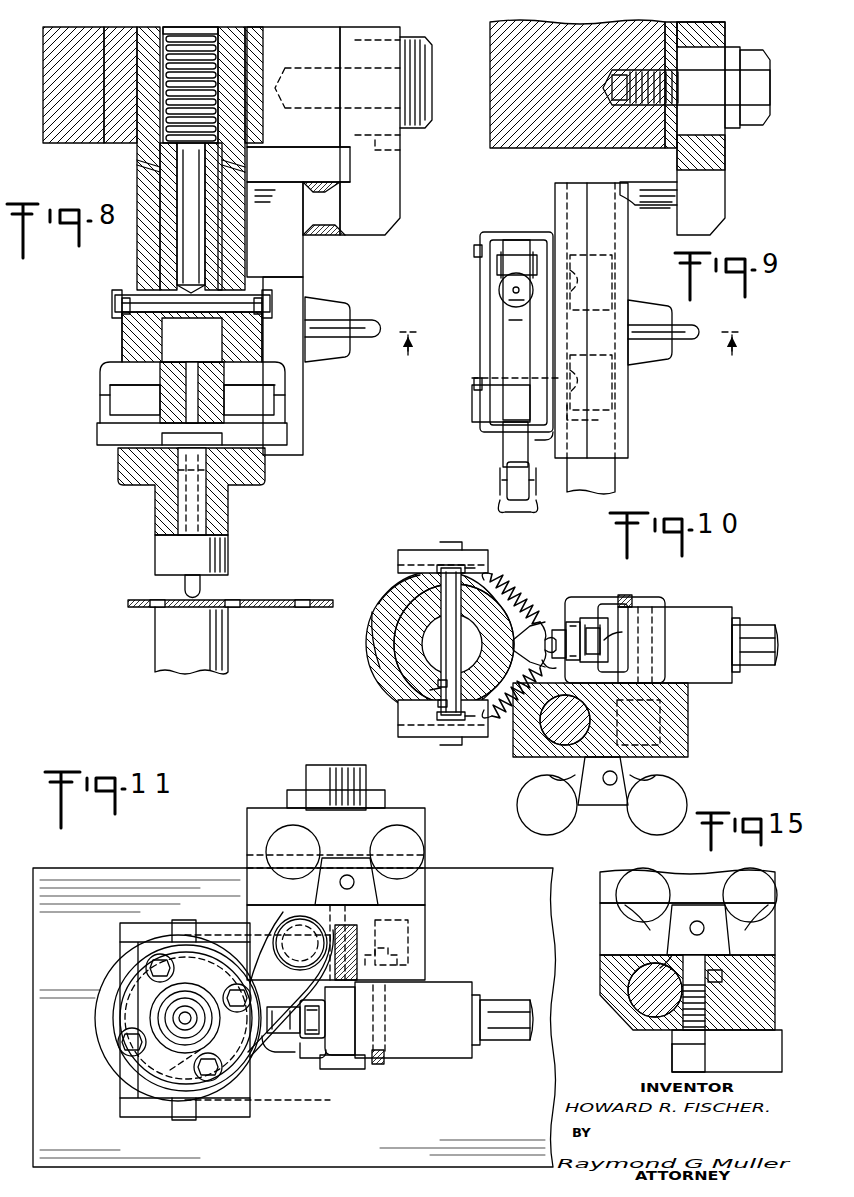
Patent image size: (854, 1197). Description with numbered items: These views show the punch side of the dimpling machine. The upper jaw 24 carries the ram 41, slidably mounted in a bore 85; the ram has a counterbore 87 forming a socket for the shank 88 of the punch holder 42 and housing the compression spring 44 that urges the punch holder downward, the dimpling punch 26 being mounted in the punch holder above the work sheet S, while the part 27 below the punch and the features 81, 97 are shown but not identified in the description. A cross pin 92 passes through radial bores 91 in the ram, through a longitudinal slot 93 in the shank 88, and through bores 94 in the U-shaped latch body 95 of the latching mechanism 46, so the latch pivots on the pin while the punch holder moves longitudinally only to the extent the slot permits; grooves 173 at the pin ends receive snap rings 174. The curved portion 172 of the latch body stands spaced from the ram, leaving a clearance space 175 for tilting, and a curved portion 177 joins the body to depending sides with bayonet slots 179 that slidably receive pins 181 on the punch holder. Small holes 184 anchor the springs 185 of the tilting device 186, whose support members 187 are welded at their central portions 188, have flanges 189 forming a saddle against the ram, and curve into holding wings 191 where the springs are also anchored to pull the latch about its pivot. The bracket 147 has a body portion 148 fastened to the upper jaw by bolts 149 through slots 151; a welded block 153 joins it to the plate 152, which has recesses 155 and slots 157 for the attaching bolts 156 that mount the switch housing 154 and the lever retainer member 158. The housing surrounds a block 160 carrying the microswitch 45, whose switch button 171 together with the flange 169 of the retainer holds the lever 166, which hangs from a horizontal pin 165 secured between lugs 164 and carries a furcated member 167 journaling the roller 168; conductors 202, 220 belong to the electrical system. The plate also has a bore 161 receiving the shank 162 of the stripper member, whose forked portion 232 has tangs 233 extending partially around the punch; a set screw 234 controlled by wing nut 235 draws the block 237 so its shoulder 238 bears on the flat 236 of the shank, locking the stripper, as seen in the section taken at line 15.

In FIG. 8, the upper jaw 24 is at (57, 68).
In FIG. 9, the upper jaw 24 is at (572, 40).
In FIG. 8, the dimpling punch 26 is at (157, 550).
In FIG. 11, the dimpling punch 26 is at (150, 1017).
In FIG. 8, the stylus shank 27 is at (160, 622).
In FIG. 8, the ram 41 is at (137, 200).
In FIG. 10, the ram 41 is at (410, 615).
In FIG. 8, the punch holder 42 is at (125, 468).
In FIG. 11, the punch holder 42 is at (118, 990).
In FIG. 8, the spring 44 is at (208, 34).
In FIG. 9, the microswitch 45 is at (478, 345).
In FIG. 10, the microswitch 45 is at (722, 690).
In FIG. 11, the microswitch 45 is at (430, 945).
In FIG. 8, the latching mechanism 46 is at (70, 305).
In FIG. 8, the stylus tip 81 is at (182, 590).
In FIG. 11, the stylus tip 81 is at (195, 1022).
In FIG. 8, the bore 85 is at (145, 122).
In FIG. 8, the counterbore 87 is at (174, 28).
In FIG. 8, the shank 88 is at (170, 227).
In FIG. 8, the radial bores 91 is at (118, 293).
In FIG. 10, the radial bores 91 is at (437, 683).
In FIG. 11, the radial bores 91 is at (160, 1070).
In FIG. 8, the cross pin 92 is at (192, 303).
In FIG. 10, the cross pin 92 is at (445, 660).
In FIG. 8, the longitudinal slot 93 is at (192, 340).
In FIG. 8, the radial bores 94 is at (128, 312).
In FIG. 10, the radial bores 94 is at (437, 703).
In FIG. 8, the latch body 95 is at (125, 330).
In FIG. 10, the latch body 95 is at (388, 590).
In FIG. 8, the bushing 97 is at (120, 32).
In FIG. 8, the bracket 147 is at (390, 186).
In FIG. 9, the bracket 147 is at (732, 148).
In FIG. 8, the body portion 148 is at (372, 35).
In FIG. 9, the body portion 148 is at (701, 128).
In FIG. 11, the body portion 148 is at (336, 856).
In FIG. 15, the body portion 148 is at (630, 878).
In FIG. 8, the bolts 149 is at (420, 37).
In FIG. 11, the bolts 149 is at (333, 768).
In FIG. 8, the slots 151 is at (402, 150).
In FIG. 9, the slots 151 is at (718, 52).
In FIG. 8, the plate 152 is at (275, 318).
In FIG. 9, the plate 152 is at (572, 193).
In FIG. 10, the plate 152 is at (535, 757).
In FIG. 11, the plate 152 is at (420, 975).
In FIG. 15, the plate 152 is at (622, 1012).
In FIG. 8, the block 153 is at (332, 222).
In FIG. 9, the block 153 is at (646, 195).
In FIG. 11, the block 153 is at (422, 896).
In FIG. 15, the block 153 is at (600, 930).
In FIG. 9, the switch housing 154 is at (484, 240).
In FIG. 10, the switch housing 154 is at (670, 607).
In FIG. 11, the switch housing 154 is at (417, 1020).
In FIG. 15, the switch housing 154 is at (762, 1072).
In FIG. 9, the recesses 155 is at (612, 265).
In FIG. 10, the recesses 155 is at (688, 738).
In FIG. 11, the recesses 155 is at (408, 925).
In FIG. 9, the attaching bolts 156 is at (600, 285).
In FIG. 10, the attaching bolts 156 is at (648, 648).
In FIG. 11, the attaching bolts 156 is at (383, 1003).
In FIG. 9, the slots 157 is at (612, 420).
In FIG. 9, the lever retainer member 158 is at (482, 326).
In FIG. 10, the lever retainer member 158 is at (660, 598).
In FIG. 11, the lever retainer member 158 is at (355, 1069).
In FIG. 9, the block 160 is at (545, 436).
In FIG. 10, the block 160 is at (630, 596).
In FIG. 11, the block 160 is at (345, 1045).
In FIG. 15, the block 160 is at (670, 1062).
In FIG. 10, the bore 161 is at (570, 745).
In FIG. 11, the bore 161 is at (298, 916).
In FIG. 9, the shank 162 is at (610, 480).
In FIG. 10, the shank 162 is at (590, 700).
In FIG. 11, the shank 162 is at (268, 900).
In FIG. 15, the shank 162 is at (638, 982).
In FIG. 9, the lugs 164 is at (520, 240).
In FIG. 10, the lugs 164 is at (580, 672).
In FIG. 11, the lugs 164 is at (312, 1008).
In FIG. 9, the horizontal pin 165 is at (498, 265).
In FIG. 10, the horizontal pin 165 is at (598, 618).
In FIG. 9, the lever 166 is at (503, 445).
In FIG. 9, the furcated member 167 is at (517, 513).
In FIG. 11, the furcated member 167 is at (298, 1055).
In FIG. 9, the roller 168 is at (508, 480).
In FIG. 10, the roller 168 is at (573, 622).
In FIG. 11, the roller 168 is at (276, 1036).
In FIG. 9, the flange 169 is at (474, 400).
In FIG. 10, the flange 169 is at (623, 637).
In FIG. 11, the flange 169 is at (315, 1060).
In FIG. 9, the switch button 171 is at (514, 291).
In FIG. 10, the switch button 171 is at (612, 638).
In FIG. 11, the switch button 171 is at (318, 1020).
In FIG. 10, the curved portion 172 is at (385, 645).
In FIG. 11, the curved portion 172 is at (96, 1030).
In FIG. 10, the grooves 173 is at (438, 568).
In FIG. 10, the retaining snap rings 174 is at (468, 566).
In FIG. 10, the clearance space 175 is at (380, 630).
In FIG. 8, the curved portion 177 is at (105, 365).
In FIG. 8, the bayonet slot 179 is at (110, 400).
In FIG. 11, the bayonet slot 179 is at (162, 921).
In FIG. 8, the pins 181 is at (105, 434).
In FIG. 10, the pins 181 is at (430, 550).
In FIG. 11, the pins 181 is at (184, 918).
In FIG. 10, the drilled holes 184 is at (494, 570).
In FIG. 10, the springs 185 is at (510, 580).
In FIG. 10, the tilting device 186 is at (500, 643).
In FIG. 10, the support members 187 is at (548, 628).
In FIG. 10, the central portions 188 is at (560, 628).
In FIG. 10, the flanges 189 is at (540, 624).
In FIG. 10, the holding wings 191 is at (560, 672).
In FIG. 10, the conductor 202 is at (762, 626).
In FIG. 11, the conductor 202 is at (508, 1002).
In FIG. 10, the conductor 220 is at (767, 630).
In FIG. 11, the conductor 220 is at (515, 1007).
In FIG. 11, the forked portion 232 is at (200, 950).
In FIG. 11, the tangs 233 is at (140, 958).
In FIG. 11, the set screw 234 is at (385, 952).
In FIG. 15, the set screw 234 is at (722, 968).
In FIG. 8, the wing nut 235 is at (340, 300).
In FIG. 9, the wing nut 235 is at (652, 310).
In FIG. 10, the wing nut 235 is at (518, 800).
In FIG. 11, the wing nut 235 is at (418, 846).
In FIG. 15, the wing nut 235 is at (725, 880).
In FIG. 15, the flat 236 is at (680, 1030).
In FIG. 11, the block 237 is at (318, 972).
In FIG. 15, the block 237 is at (712, 1040).
In FIG. 15, the flat shoulder 238 is at (663, 958).
In FIG. 8, the sheet S is at (128, 603).
In FIG. 8, the section line 15 is at (410, 335).
In FIG. 9, the section line 15 is at (732, 335).